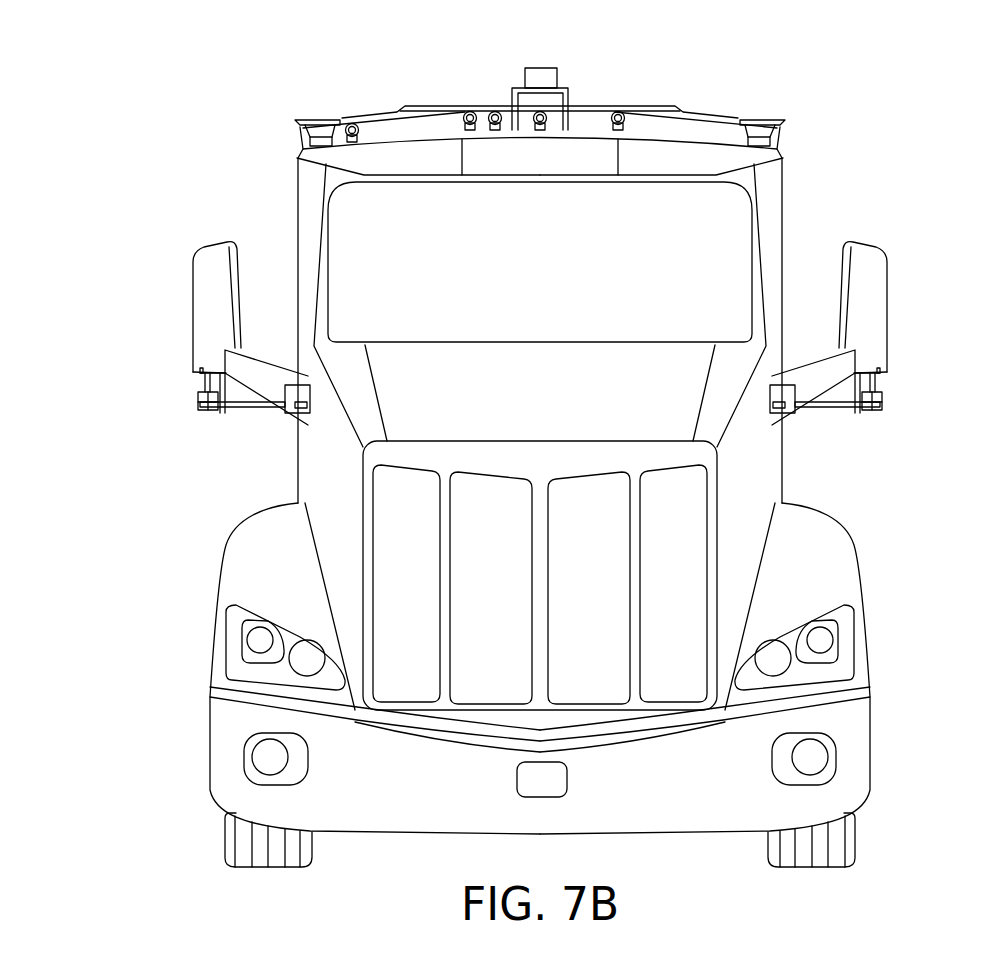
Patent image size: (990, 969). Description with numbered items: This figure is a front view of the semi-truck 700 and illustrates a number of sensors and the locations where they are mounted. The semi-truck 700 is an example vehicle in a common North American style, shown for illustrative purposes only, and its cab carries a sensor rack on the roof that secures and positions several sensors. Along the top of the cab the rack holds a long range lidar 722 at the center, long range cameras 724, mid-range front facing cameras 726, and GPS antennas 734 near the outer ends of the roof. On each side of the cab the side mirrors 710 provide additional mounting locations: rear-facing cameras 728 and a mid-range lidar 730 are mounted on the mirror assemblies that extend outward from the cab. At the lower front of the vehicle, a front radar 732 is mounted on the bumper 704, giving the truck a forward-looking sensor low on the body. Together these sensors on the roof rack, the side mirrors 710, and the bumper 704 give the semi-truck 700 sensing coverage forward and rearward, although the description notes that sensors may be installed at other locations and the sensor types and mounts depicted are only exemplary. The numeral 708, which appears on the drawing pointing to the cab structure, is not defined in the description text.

The semi-truck 700 is at (243, 91).
The bumper 704 is at (654, 805).
The cab 708 is at (757, 248).
The side mirrors 710 is at (208, 243).
The long range lidar 722 is at (540, 68).
The long range cameras 724 is at (470, 111).
The mid-range front facing cameras 726 is at (540, 111).
The rear-facing cameras 728 is at (253, 400).
The mid-range lidar 730 is at (198, 400).
The front radar 732 is at (535, 778).
The GPS antennas 734 is at (322, 120).